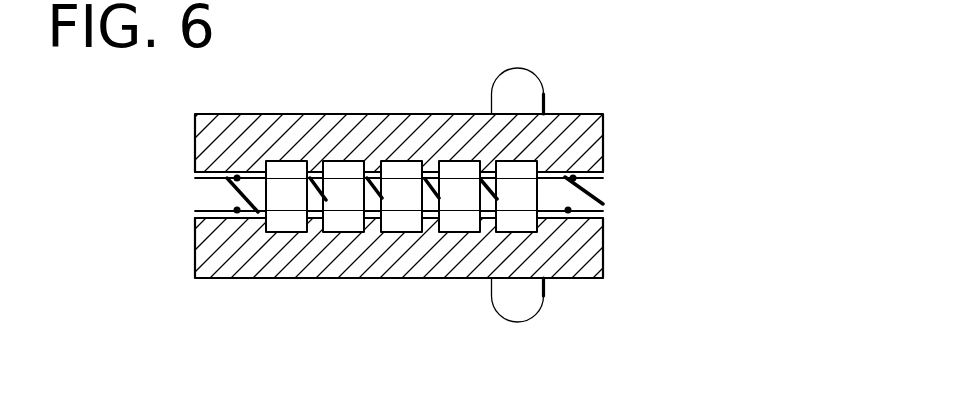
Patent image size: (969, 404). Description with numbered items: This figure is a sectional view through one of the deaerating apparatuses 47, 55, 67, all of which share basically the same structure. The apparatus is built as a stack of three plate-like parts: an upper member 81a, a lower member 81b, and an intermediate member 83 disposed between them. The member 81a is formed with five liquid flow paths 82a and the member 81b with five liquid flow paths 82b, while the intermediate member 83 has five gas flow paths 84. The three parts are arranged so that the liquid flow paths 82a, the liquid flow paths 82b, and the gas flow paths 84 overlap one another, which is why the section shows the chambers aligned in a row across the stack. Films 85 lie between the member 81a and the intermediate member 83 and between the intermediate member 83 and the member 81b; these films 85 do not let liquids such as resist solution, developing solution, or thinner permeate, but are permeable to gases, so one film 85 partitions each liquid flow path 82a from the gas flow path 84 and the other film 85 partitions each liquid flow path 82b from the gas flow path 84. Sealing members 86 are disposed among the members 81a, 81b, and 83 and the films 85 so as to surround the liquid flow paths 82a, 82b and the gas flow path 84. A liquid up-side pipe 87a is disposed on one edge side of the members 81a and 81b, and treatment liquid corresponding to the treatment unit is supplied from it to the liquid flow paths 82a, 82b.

The deaerating apparatus 47 is at (648, 84).
The deaerating apparatus 55 is at (397, 218).
The deaerating apparatus 67 is at (397, 218).
The member 81a is at (195, 130).
The member 81b is at (212, 253).
The liquid flow paths 82a is at (397, 160).
The liquid flow paths 82b is at (340, 233).
The intermediate member 83 is at (592, 199).
The gas flow paths 84 is at (333, 200).
The films 85 is at (195, 172).
The sealing members 86 is at (237, 176).
The liquid up-side pipe 87a is at (545, 72).